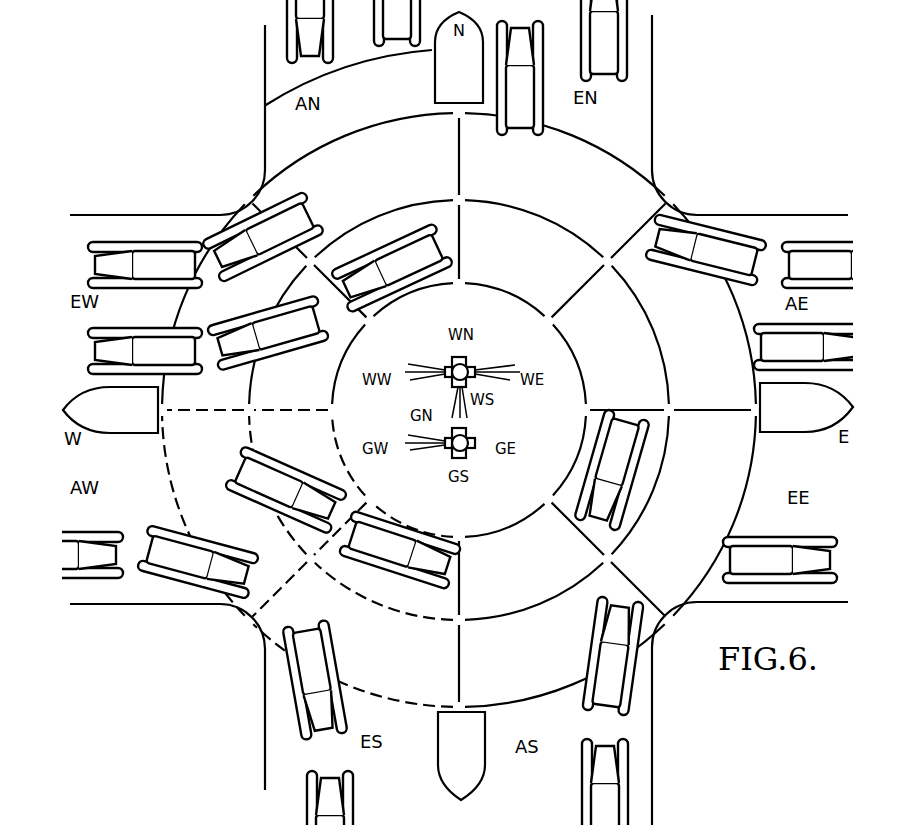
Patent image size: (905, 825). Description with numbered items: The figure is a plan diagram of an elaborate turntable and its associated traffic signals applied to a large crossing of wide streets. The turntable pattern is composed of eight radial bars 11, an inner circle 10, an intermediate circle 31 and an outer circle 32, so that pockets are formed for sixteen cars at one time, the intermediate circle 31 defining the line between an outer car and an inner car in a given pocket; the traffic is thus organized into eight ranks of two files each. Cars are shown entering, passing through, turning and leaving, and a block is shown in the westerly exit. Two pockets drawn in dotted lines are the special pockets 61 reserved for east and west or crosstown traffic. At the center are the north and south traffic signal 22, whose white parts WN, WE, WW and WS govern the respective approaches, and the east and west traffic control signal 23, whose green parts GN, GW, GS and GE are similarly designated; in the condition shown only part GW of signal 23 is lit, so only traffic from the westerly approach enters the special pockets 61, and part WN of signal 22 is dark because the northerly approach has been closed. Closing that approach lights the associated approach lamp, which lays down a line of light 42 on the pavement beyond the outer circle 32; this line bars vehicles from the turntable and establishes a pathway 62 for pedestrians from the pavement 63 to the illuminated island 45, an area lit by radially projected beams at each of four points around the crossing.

The inner circle 10 is at (510, 295).
The radial bars 11 is at (461, 243).
The north and south traffic signal 22 is at (470, 366).
The east and west traffic control signal 23 is at (470, 444).
The intermediate circle 31 is at (548, 218).
The outer circle 32 is at (593, 148).
The line of light 42 is at (354, 62).
The illuminated island 45 is at (466, 30).
The special pockets 61 is at (195, 470).
The pathway 62 is at (353, 139).
The pavement 63 is at (167, 120).